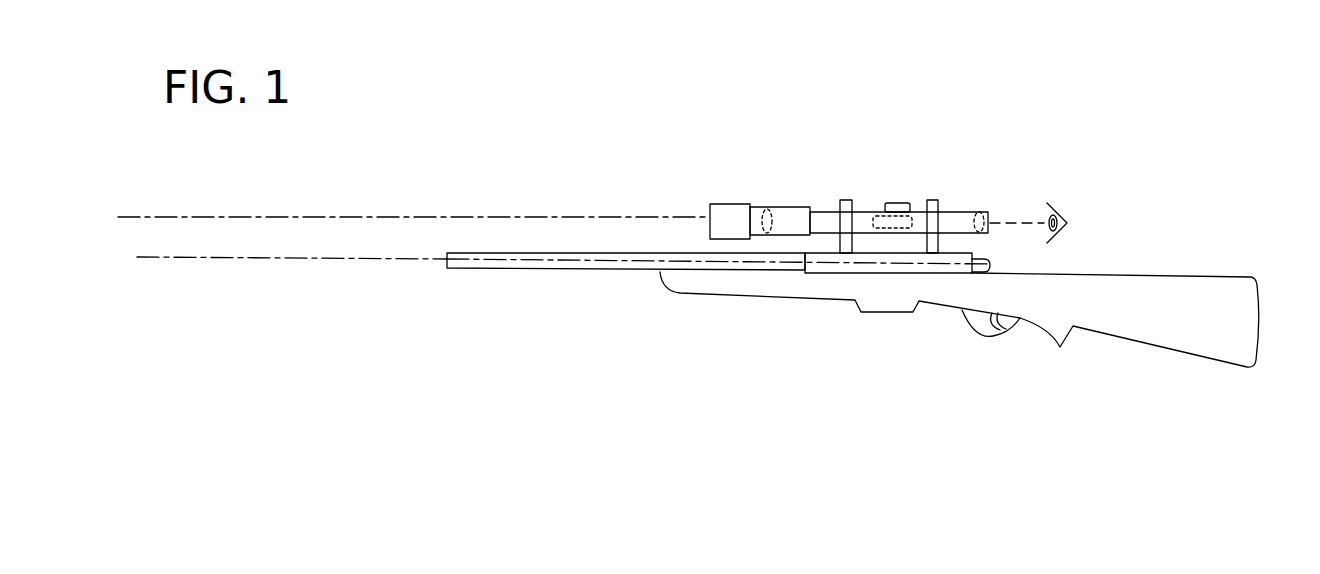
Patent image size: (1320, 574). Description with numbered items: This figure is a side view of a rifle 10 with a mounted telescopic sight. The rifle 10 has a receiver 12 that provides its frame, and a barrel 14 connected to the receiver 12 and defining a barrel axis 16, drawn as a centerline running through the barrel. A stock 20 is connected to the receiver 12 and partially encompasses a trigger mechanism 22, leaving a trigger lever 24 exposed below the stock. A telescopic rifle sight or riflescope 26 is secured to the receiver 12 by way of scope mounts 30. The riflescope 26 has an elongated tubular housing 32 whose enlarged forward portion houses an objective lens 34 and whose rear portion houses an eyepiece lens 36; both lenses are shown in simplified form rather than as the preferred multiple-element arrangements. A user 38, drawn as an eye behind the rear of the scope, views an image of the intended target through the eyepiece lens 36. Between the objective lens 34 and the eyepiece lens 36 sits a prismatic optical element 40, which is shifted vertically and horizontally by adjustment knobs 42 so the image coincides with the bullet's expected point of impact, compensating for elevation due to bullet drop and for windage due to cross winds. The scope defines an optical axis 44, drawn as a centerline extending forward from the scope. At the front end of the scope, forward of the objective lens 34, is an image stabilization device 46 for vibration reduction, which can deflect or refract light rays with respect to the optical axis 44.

The rifle 10 is at (637, 353).
The receiver 12 is at (967, 253).
The barrel 14 is at (548, 270).
The barrel axis 16 is at (320, 258).
The stock 20 is at (1222, 273).
The trigger mechanism 22 is at (955, 333).
The trigger lever 24 is at (1017, 333).
The riflescope 26 is at (850, 187).
The scope mounts 30 is at (847, 198).
The elongated tubular housing 32 is at (793, 207).
The objective lens 34 is at (773, 207).
The eyepiece lens 36 is at (963, 210).
The user 38 is at (1058, 198).
The prismatic optical element 40 is at (893, 225).
The adjustment knobs 42 is at (887, 207).
The optical axis 44 is at (493, 217).
The image stabilization device 46 is at (720, 202).